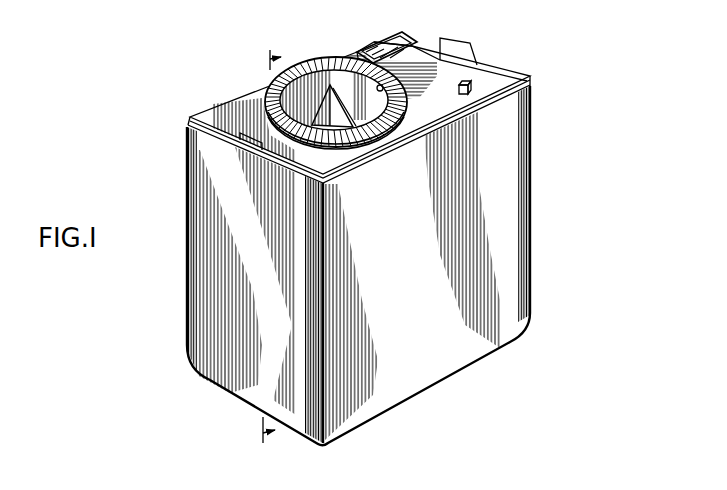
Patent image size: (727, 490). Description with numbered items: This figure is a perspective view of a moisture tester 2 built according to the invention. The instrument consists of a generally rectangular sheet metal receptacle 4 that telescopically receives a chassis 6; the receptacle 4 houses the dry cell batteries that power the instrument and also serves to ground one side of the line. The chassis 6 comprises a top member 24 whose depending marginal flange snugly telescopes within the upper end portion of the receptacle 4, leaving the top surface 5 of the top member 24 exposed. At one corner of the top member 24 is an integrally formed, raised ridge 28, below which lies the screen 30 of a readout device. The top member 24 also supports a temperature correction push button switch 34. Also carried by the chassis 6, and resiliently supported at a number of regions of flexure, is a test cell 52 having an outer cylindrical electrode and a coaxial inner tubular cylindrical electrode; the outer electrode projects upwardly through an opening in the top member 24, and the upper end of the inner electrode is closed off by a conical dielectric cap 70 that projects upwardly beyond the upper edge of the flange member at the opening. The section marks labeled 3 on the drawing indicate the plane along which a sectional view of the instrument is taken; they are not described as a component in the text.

The moisture tester 2 is at (173, 203).
The section line 3- 3 is at (272, 246).
The receptacle 4 is at (533, 150).
The top surface 5 is at (403, 120).
The chassis 6 is at (505, 78).
The top member 24 is at (218, 113).
The raised ridge 28 is at (375, 40).
The screen 30 is at (418, 45).
The temperature correction push button switch 34 is at (466, 94).
The test cell 52 is at (366, 150).
The conical dielectric cap 70 is at (308, 142).